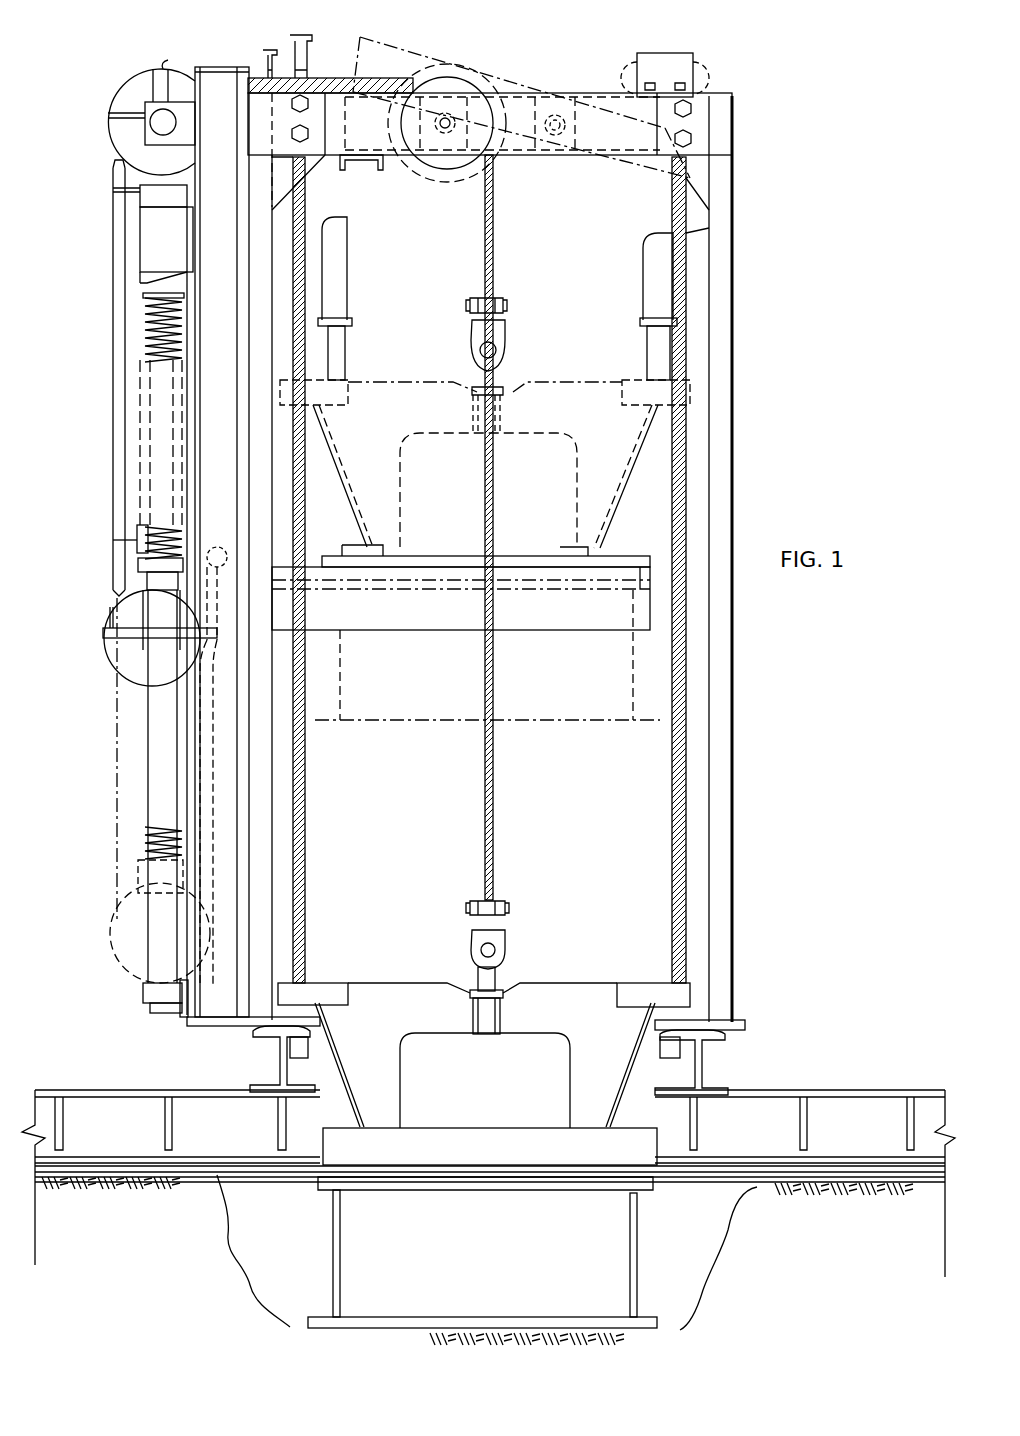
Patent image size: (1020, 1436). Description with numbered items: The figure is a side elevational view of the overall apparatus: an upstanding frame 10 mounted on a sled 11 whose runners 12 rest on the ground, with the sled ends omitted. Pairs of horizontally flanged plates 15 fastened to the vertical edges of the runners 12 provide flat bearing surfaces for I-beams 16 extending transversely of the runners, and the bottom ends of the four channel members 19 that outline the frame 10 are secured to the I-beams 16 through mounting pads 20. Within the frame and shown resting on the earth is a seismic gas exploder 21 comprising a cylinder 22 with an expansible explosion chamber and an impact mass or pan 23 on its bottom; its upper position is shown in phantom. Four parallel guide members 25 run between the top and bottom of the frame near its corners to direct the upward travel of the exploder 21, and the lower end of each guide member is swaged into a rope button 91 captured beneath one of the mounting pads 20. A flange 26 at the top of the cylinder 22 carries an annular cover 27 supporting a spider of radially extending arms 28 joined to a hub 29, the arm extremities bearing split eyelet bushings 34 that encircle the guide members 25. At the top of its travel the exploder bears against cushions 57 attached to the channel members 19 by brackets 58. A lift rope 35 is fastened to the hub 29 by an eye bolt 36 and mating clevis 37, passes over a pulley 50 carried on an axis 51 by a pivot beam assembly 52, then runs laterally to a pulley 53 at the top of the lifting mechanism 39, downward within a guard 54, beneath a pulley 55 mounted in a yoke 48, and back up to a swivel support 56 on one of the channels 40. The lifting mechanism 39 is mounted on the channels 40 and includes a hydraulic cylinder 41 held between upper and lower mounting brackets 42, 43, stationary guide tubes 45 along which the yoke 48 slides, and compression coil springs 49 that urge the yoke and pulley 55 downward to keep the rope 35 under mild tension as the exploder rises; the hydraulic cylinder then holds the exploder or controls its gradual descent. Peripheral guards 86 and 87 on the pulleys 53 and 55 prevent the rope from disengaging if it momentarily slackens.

The frame 10 is at (746, 157).
The sled 11 is at (205, 1177).
The runners 12 is at (712, 1180).
The horizontally flanged plates 15 is at (247, 1150).
The I-beams 16 is at (287, 1068).
The channel members 19 is at (720, 836).
The mounting pads 20 is at (320, 1023).
The seismic gas exploder 21 is at (638, 696).
The cylinder 22 is at (334, 1268).
The impact mass or pan 23 is at (582, 724).
The guide members 25 is at (303, 852).
The flange 26 is at (650, 590).
The annular cover 27 is at (637, 558).
The arms 28 is at (420, 993).
The hub 29 is at (488, 1017).
The split eyelet bushings 34 is at (348, 397).
The lift rope 35 is at (492, 843).
The eye bolt 36 is at (494, 984).
The clevis 37 is at (498, 944).
The lifting mechanism 39 is at (105, 113).
The channels 40 is at (212, 442).
The cylinder 41 is at (153, 252).
The upper mounting bracket 42 is at (143, 200).
The lower mounting bracket 43 is at (137, 542).
The guide tubes 45 is at (160, 781).
The yoke 48 is at (143, 618).
The compression coil springs 49 is at (150, 337).
The pulley 50 is at (492, 145).
The axis 51 is at (447, 133).
The pivot beam assembly 52 is at (380, 38).
The pulley 53 is at (145, 90).
The guard 54 is at (118, 331).
The pulley 55 is at (128, 657).
The swivel support 56 is at (217, 546).
The cushions 57 is at (338, 366).
The brackets 58 is at (330, 247).
The peripheral guard 86 is at (170, 72).
The peripheral guard 87 is at (130, 686).
The rope button 91 is at (308, 1047).